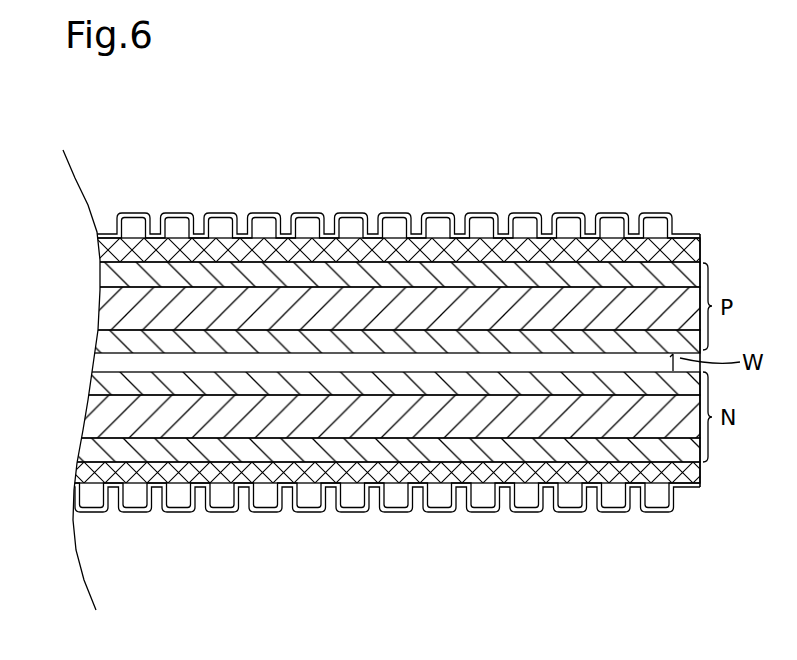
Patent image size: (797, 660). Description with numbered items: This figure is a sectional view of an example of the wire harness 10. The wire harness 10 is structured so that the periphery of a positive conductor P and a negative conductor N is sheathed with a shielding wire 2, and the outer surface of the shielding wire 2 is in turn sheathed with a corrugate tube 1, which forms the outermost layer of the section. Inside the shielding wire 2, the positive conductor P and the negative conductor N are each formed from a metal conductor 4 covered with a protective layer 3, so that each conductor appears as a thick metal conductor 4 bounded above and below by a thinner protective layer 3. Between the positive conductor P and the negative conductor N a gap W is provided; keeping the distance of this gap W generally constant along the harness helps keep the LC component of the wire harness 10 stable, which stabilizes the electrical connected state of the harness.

The wire harness 10 is at (274, 177).
The corrugate tube 1 is at (688, 229).
The shielding wire 2 is at (703, 248).
The protective layer 3 is at (98, 278).
The metal conductor 4 is at (98, 312).